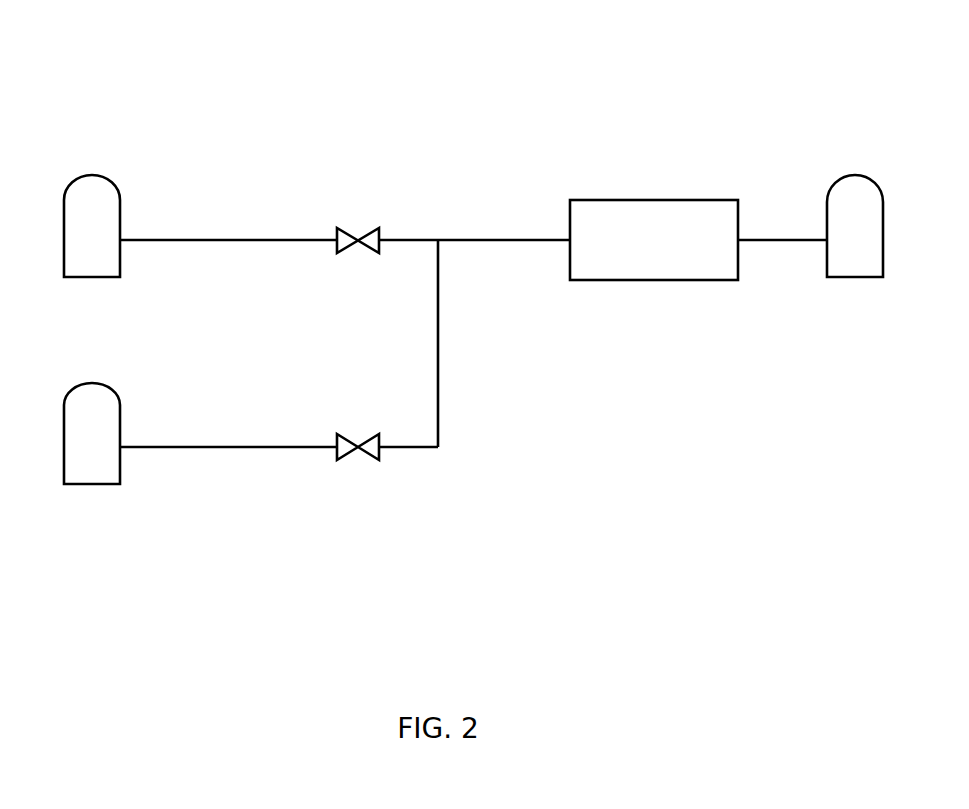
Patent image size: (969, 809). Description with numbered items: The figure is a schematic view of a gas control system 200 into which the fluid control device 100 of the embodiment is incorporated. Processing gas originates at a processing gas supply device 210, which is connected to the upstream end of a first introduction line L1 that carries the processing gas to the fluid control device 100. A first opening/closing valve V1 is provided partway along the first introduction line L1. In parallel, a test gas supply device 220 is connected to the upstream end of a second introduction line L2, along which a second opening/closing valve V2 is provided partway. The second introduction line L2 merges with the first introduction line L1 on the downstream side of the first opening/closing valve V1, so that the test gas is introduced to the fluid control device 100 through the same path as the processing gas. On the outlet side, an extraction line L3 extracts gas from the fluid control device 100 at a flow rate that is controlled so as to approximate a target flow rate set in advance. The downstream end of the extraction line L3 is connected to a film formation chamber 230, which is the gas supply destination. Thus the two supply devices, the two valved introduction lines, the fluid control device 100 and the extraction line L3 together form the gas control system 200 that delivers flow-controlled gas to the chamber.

The gas control system 200 is at (779, 81).
The processing gas supply device 210 is at (92, 226).
The test gas supply device 220 is at (92, 433).
The film formation chamber 230 is at (855, 226).
The fluid control device 100 is at (654, 240).
The first introduction line L1 is at (345, 333).
The second introduction line L2 is at (279, 436).
The extraction line L3 is at (782, 229).
The first opening/closing valve V1 is at (380, 228).
The second opening/closing valve V2 is at (372, 457).